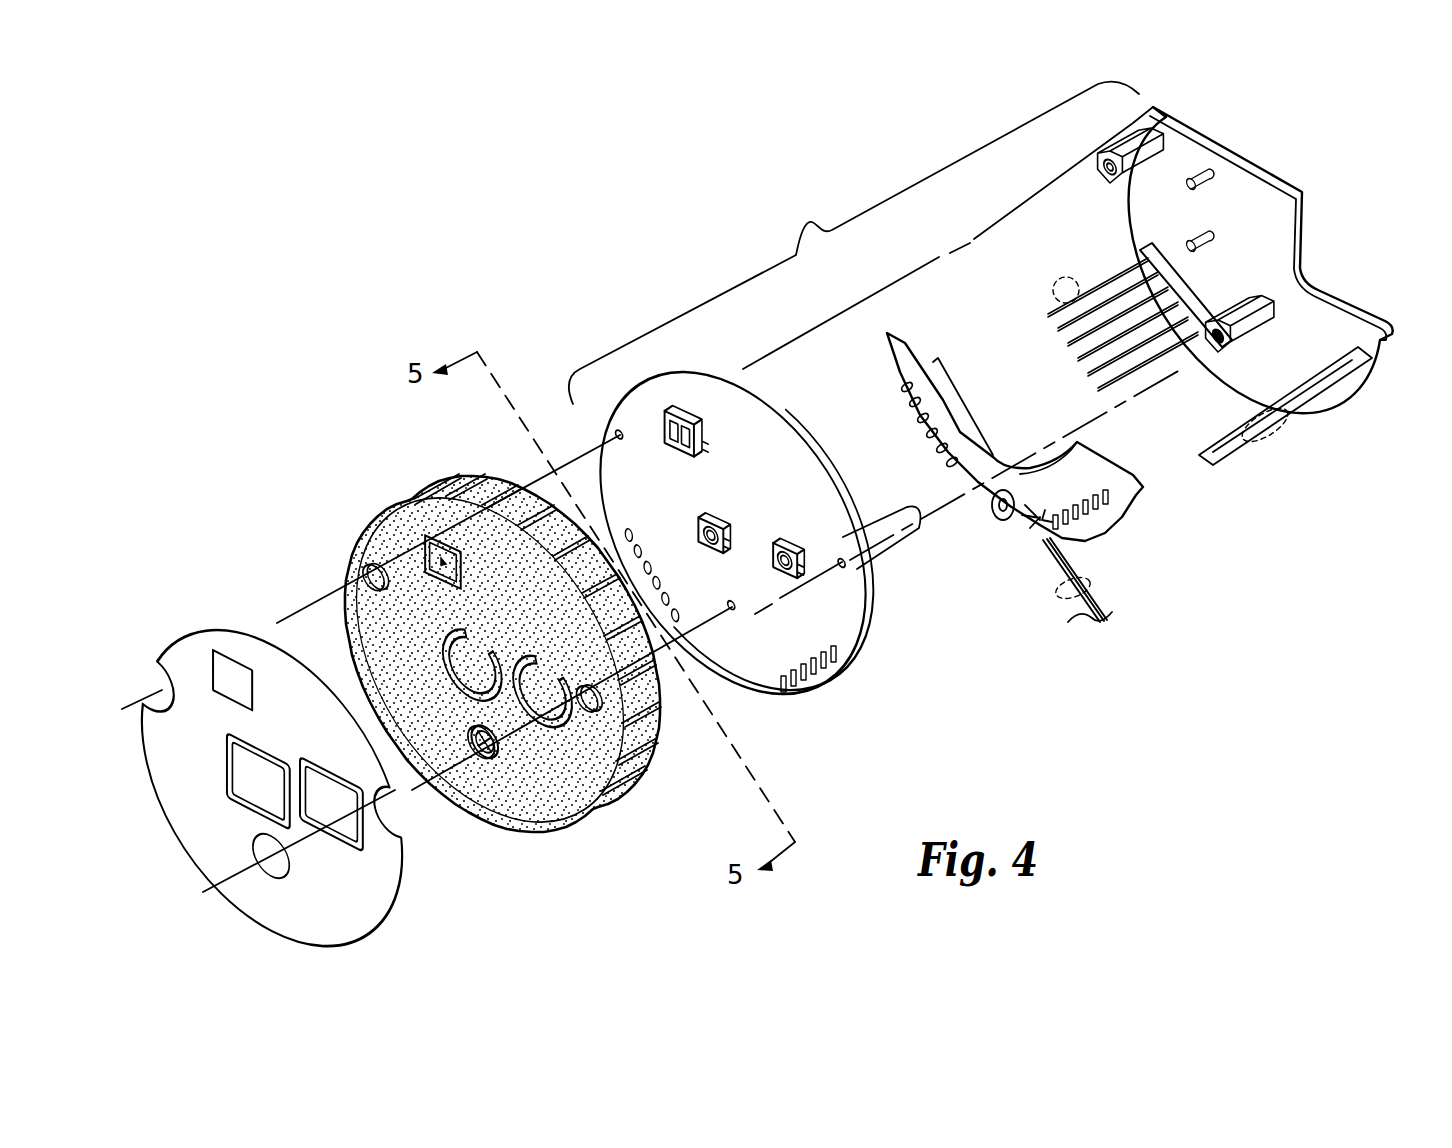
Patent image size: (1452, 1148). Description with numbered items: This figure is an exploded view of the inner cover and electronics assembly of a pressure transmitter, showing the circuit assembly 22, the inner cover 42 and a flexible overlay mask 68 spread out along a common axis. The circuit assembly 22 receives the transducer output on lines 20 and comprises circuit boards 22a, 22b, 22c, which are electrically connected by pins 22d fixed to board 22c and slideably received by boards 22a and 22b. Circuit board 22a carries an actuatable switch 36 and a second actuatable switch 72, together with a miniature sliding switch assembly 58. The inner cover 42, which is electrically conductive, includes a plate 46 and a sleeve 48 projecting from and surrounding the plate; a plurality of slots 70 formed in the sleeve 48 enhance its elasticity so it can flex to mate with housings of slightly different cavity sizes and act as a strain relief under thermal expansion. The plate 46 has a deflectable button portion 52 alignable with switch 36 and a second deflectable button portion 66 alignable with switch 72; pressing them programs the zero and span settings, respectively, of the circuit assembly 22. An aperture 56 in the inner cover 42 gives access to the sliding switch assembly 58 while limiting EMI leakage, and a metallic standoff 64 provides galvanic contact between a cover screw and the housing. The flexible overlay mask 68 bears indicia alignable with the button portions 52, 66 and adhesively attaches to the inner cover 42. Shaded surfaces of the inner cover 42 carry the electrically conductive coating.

The lines 20 is at (1108, 571).
The circuit assembly 22 is at (861, 243).
The circuit board 22a is at (620, 425).
The circuit board 22b is at (888, 355).
The circuit board 22c is at (1256, 180).
The pins 22d is at (1066, 285).
The actuatable switch 36 is at (724, 518).
The inner cover 42 is at (336, 573).
The plate 46 is at (515, 812).
The sleeve 48 is at (633, 805).
The deflectable button portion 52 is at (462, 712).
The aperture 56 is at (425, 540).
The miniature sliding switch assembly 58 is at (690, 412).
The metallic standoff 64 is at (1238, 345).
The second deflectable button portion 66 is at (573, 820).
The flexible overlay mask 68 is at (380, 898).
The slots 70 is at (520, 481).
The second actuatable switch 72 is at (792, 546).